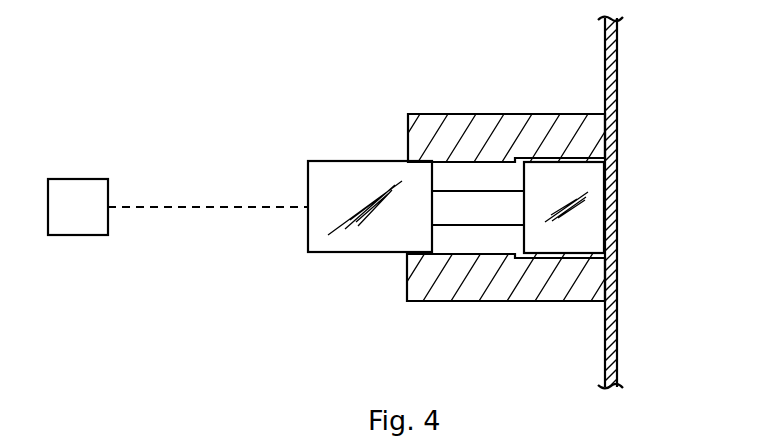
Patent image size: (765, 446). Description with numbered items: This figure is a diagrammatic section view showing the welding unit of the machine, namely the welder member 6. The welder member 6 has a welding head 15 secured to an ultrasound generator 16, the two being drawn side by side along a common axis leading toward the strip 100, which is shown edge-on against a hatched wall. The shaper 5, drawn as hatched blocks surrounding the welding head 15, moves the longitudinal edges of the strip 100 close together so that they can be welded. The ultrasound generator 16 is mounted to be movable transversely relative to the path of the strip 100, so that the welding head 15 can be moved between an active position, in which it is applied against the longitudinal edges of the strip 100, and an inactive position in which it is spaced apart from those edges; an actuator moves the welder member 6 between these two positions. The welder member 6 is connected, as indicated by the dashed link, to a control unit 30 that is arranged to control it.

The strip 100 is at (618, 62).
The shaper 5 is at (478, 113).
The ultrasound generator 16 is at (362, 252).
The welding head 15 is at (548, 244).
The control unit 30 is at (73, 181).
The welder member 6 is at (265, 151).